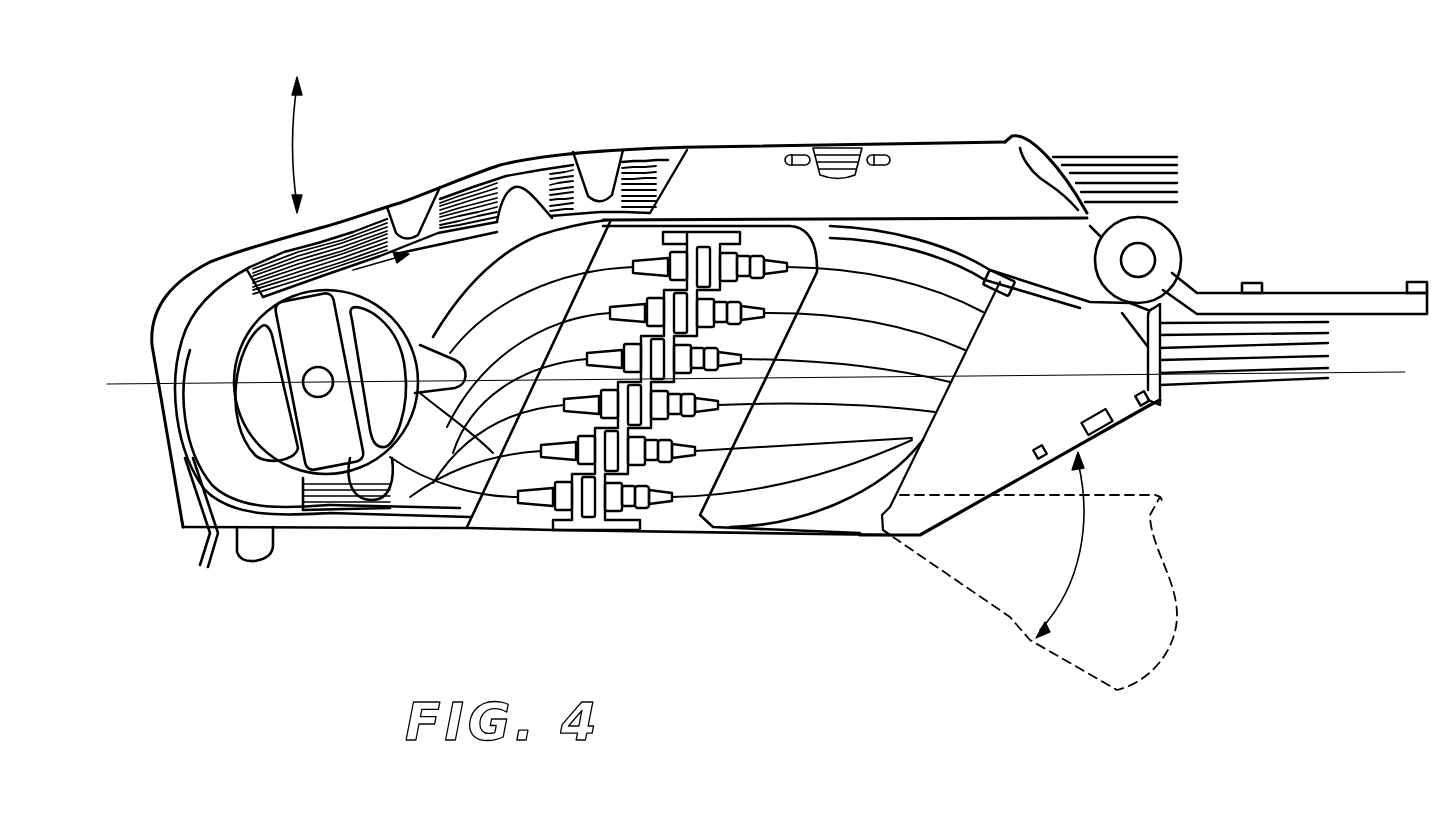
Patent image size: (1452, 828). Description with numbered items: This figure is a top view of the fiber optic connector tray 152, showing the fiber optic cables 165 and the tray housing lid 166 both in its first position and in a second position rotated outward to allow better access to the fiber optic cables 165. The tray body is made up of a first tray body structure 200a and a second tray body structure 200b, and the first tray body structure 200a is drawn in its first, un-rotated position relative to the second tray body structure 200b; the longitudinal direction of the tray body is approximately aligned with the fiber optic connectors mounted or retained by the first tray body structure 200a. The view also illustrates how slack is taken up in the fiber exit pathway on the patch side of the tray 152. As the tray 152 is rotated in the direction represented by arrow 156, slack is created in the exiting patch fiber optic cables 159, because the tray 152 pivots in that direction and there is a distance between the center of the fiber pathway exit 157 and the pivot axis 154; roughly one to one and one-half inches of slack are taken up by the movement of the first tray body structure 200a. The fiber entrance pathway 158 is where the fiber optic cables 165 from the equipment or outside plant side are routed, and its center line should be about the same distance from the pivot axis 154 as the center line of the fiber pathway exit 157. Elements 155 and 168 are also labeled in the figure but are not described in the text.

The fiber optic connector tray 152 is at (765, 135).
The pivot axis 154 is at (1138, 262).
The spool housing 155 is at (132, 384).
The arrow 156 is at (292, 137).
The fiber pathway exit 157 is at (1043, 180).
The fiber entrance pathway 158 is at (1150, 347).
The exiting patch fiber optic cables 159 is at (1122, 160).
The fiber optic cables 165 is at (918, 272).
The tray housing lid 166 is at (1020, 424).
The feed direction arrow 168 is at (383, 268).
The first tray body structure 200a is at (593, 538).
The second tray body structure 200b is at (517, 152).